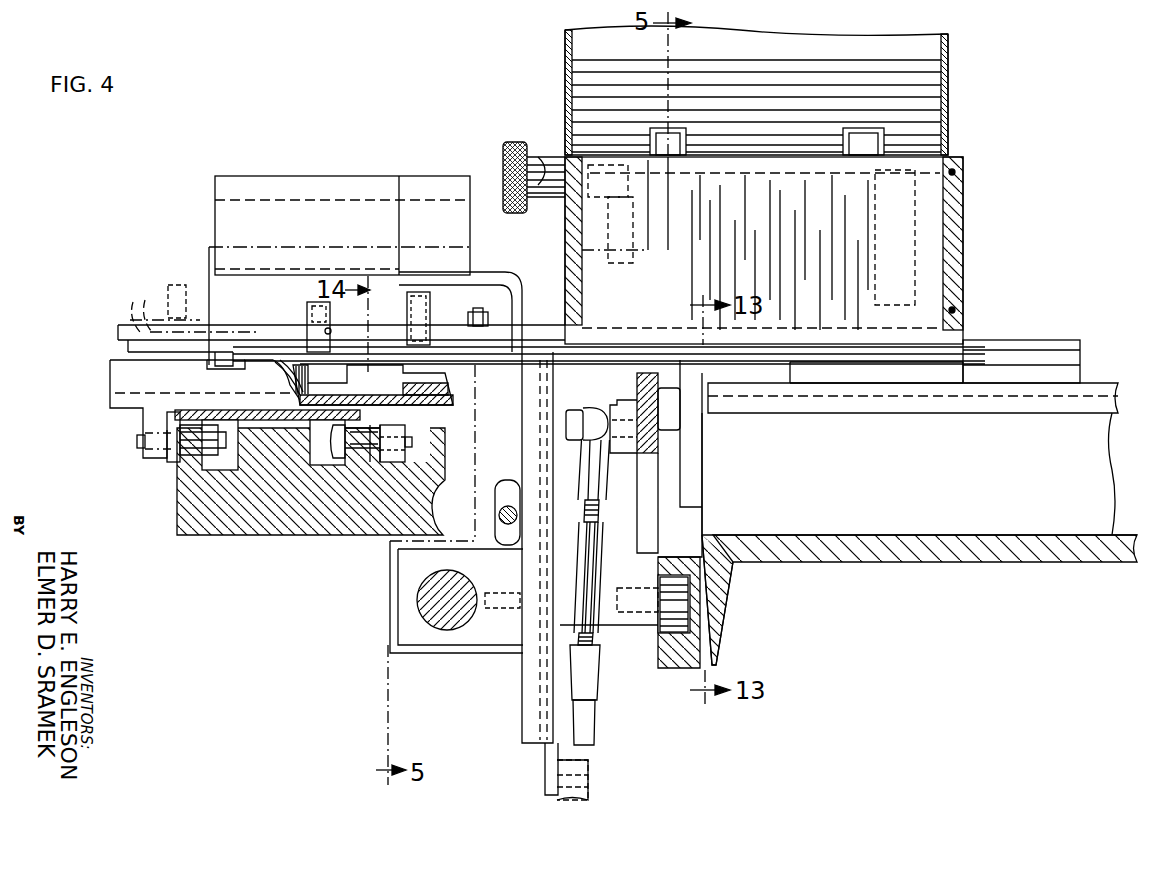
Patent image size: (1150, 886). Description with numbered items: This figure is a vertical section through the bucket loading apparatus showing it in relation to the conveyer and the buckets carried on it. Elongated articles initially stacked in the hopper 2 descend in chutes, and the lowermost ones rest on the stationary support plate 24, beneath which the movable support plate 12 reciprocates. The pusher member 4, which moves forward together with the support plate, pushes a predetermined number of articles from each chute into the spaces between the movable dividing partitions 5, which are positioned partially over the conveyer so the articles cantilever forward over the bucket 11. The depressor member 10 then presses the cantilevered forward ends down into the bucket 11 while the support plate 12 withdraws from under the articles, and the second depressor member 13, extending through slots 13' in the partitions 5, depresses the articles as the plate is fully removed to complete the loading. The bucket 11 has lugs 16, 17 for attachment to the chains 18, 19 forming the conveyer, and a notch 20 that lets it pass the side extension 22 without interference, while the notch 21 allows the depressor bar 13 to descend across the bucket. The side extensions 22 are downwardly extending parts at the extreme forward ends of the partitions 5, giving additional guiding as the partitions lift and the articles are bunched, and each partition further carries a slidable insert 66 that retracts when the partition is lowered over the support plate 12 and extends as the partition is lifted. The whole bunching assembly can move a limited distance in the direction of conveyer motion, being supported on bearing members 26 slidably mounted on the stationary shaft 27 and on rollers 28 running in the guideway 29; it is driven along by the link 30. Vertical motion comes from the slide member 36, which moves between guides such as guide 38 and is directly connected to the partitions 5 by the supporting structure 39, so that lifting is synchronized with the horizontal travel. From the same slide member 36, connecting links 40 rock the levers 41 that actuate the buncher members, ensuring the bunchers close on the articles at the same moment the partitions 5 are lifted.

The hopper 2 is at (948, 82).
The pusher member 4 is at (487, 345).
The movable dividing partitions 5 is at (232, 236).
The depressor member 10 is at (174, 287).
The bucket 11 is at (110, 376).
The support plate 12 is at (284, 346).
The second depressor member 13 is at (298, 311).
The slots 13' is at (347, 318).
The lug 16 is at (142, 455).
The lug 17 is at (406, 454).
The chain 18 is at (176, 460).
The chain 19 is at (372, 464).
The notch 20 is at (206, 368).
The notch 21 is at (350, 378).
The side extension 22 is at (225, 350).
The stationary support plate 24 is at (845, 355).
The bearing members 26 is at (402, 637).
The stationary shaft 27 is at (418, 600).
The rollers 28 is at (662, 630).
The guideway 29 is at (674, 645).
The link 30 is at (506, 505).
The slide member 36 is at (547, 760).
The guide 38 is at (524, 706).
The supporting structure 39 is at (462, 282).
The connecting link 40 is at (590, 580).
The lever 41 is at (640, 386).
The slidable insert 66 is at (420, 312).